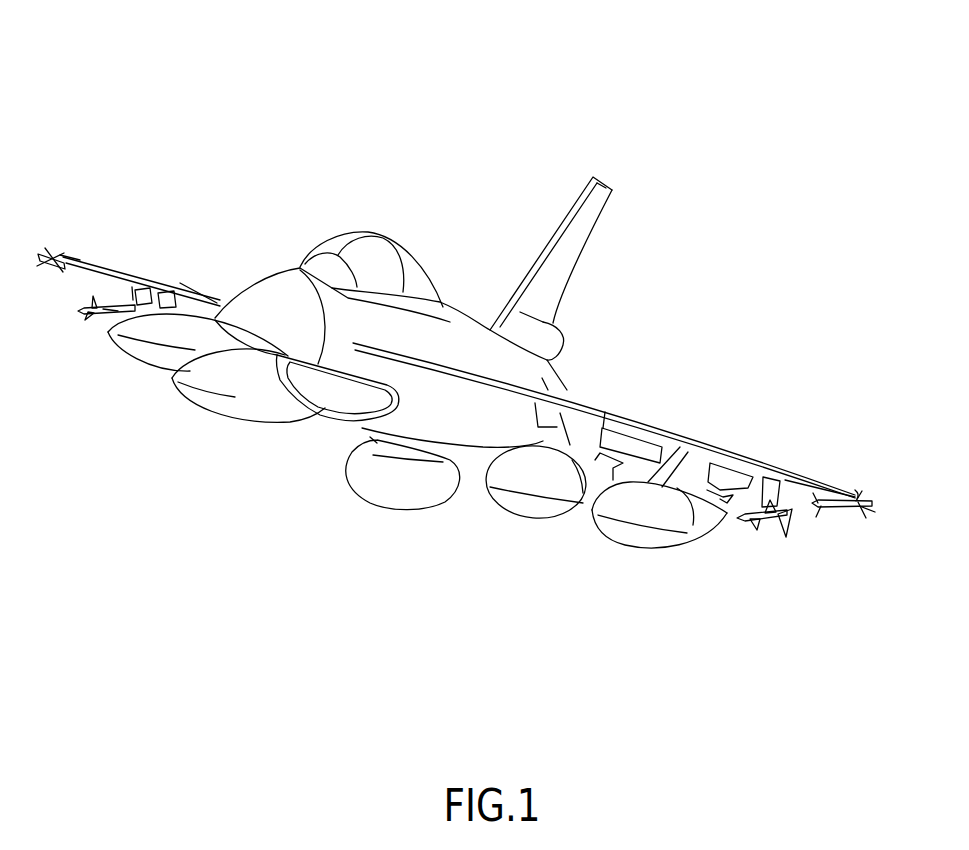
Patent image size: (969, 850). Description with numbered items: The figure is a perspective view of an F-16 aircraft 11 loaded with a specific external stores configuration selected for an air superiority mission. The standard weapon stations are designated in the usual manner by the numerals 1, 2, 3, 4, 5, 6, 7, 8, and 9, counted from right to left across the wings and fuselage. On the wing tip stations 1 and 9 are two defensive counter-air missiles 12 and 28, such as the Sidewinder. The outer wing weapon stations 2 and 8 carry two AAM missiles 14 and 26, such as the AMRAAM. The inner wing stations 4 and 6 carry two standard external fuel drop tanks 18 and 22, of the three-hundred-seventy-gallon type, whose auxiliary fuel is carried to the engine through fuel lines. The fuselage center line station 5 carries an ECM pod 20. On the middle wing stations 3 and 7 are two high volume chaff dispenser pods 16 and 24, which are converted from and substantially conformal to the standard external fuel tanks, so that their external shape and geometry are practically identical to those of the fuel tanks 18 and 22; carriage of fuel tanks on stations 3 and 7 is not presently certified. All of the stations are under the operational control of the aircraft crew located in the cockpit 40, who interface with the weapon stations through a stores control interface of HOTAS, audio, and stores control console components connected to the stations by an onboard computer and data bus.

The aircraft 11 is at (727, 73).
The wing tip weapon station 1 is at (75, 253).
The outer wing weapon station 2 is at (147, 287).
The middle wing weapon station 3 is at (190, 303).
The inner wing weapon station 4 is at (260, 280).
The fuselage center line station 5 is at (377, 440).
The inner wing weapon station 6 is at (583, 433).
The middle wing weapon station 7 is at (683, 447).
The outer wing weapon station 8 is at (770, 463).
The wing tip weapon station 9 is at (843, 483).
The defensive counter-air missile 12 is at (58, 267).
The AAM missile 14 is at (97, 317).
The high volume chaff dispenser pod 16 is at (135, 367).
The standard external fuel drop tank 18 is at (217, 420).
The ECM pod 20 is at (387, 497).
The standard external fuel drop tank 22 is at (530, 517).
The high volume chaff dispenser pod 24 is at (643, 550).
The AAM missile 26 is at (743, 533).
The defensive counter-air missile 28 is at (847, 513).
The cockpit 40 is at (370, 227).